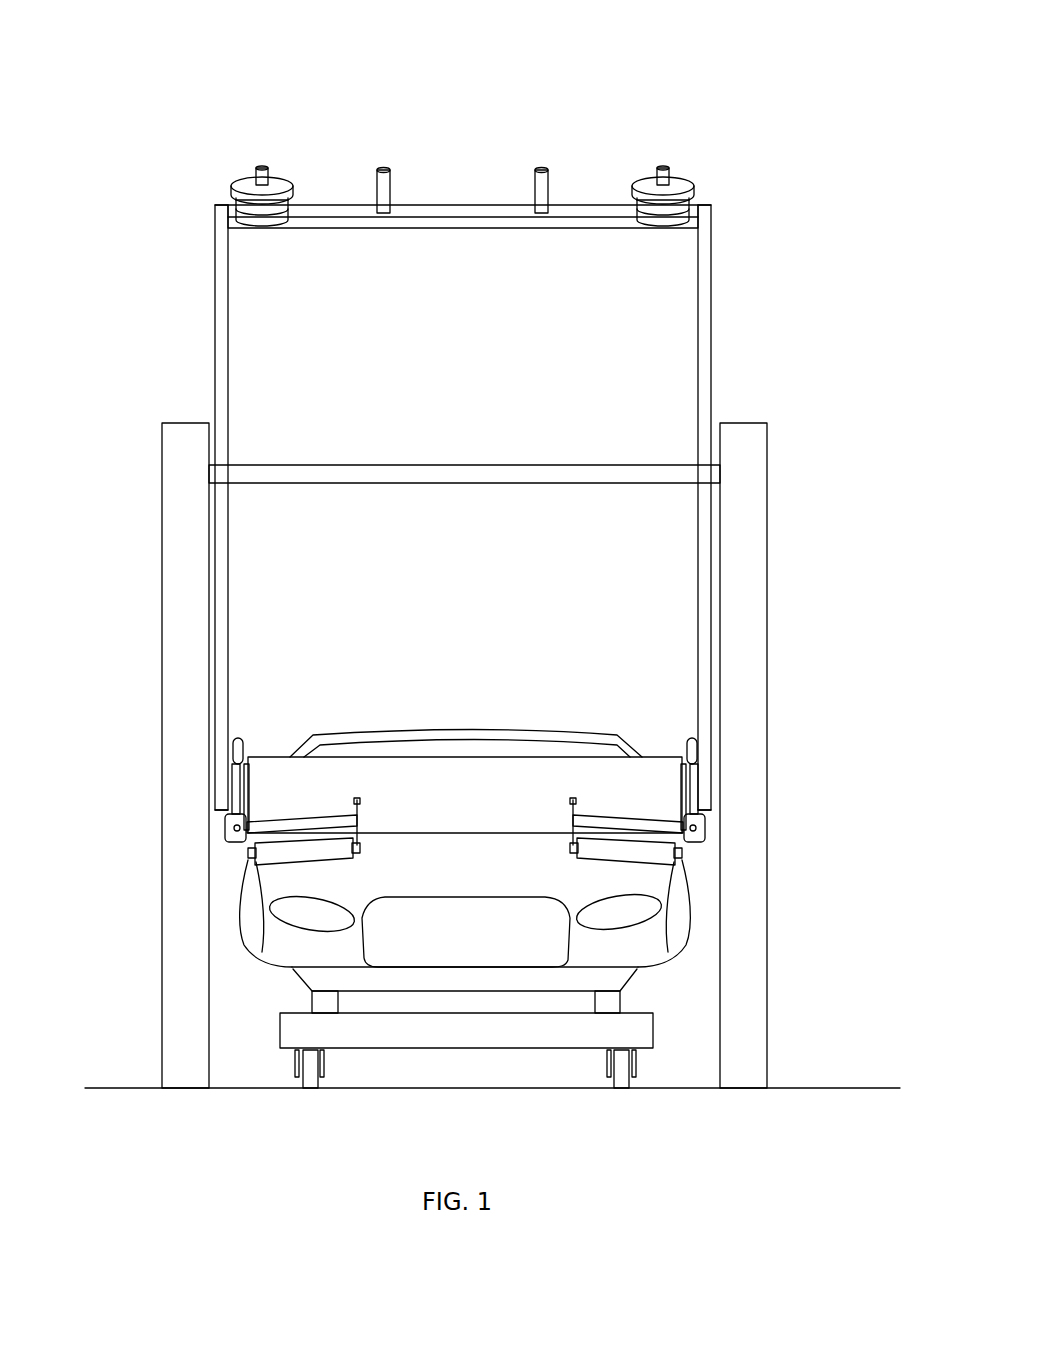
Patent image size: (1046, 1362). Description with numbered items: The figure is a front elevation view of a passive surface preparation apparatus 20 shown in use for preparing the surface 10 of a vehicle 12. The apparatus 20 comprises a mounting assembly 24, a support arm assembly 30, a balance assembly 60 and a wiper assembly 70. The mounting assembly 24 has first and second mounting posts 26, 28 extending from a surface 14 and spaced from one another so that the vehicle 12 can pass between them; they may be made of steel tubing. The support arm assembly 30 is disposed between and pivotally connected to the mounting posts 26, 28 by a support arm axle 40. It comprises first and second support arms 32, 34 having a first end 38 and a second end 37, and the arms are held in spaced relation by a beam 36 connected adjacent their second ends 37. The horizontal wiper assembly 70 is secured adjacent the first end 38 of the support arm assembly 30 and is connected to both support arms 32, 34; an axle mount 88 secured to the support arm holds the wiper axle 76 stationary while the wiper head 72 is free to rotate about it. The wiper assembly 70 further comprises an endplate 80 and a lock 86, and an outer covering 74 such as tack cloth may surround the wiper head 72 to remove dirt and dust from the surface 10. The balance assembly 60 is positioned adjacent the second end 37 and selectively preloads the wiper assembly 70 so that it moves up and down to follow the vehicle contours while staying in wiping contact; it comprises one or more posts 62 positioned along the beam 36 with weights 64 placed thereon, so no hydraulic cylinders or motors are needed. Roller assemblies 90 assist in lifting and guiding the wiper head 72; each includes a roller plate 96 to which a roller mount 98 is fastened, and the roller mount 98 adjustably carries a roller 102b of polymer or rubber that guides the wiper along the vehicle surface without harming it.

The surface 10 is at (512, 870).
The vehicle 12 is at (465, 853).
The surface 14 is at (830, 1078).
The surface preparation apparatus 20 is at (78, 75).
The mounting assembly 24 is at (409, 729).
The first mounting post 26 is at (190, 422).
The second mounting post 28 is at (742, 422).
The support arm assembly 30 is at (464, 484).
The first support arm 32 is at (274, 507).
The second support arm 34 is at (650, 507).
The beam 36 is at (448, 210).
The second end 37 is at (215, 240).
The first end 38 is at (220, 802).
The support arm axle 40 is at (470, 464).
The balance assembly 60 is at (461, 152).
The post 62 is at (261, 166).
The weight 64 is at (293, 192).
The wiper assembly 70 is at (278, 763).
The wiper head 72 is at (466, 708).
The outer covering 74 is at (412, 834).
The wiper axle 76 is at (684, 765).
The endplate 80 is at (248, 784).
The lock 86 is at (230, 752).
The axle mount 88 is at (228, 798).
The roller assembly 90 is at (465, 935).
The roller plate 96 is at (224, 828).
The roller mount 98 is at (308, 828).
The roller 102b is at (336, 856).